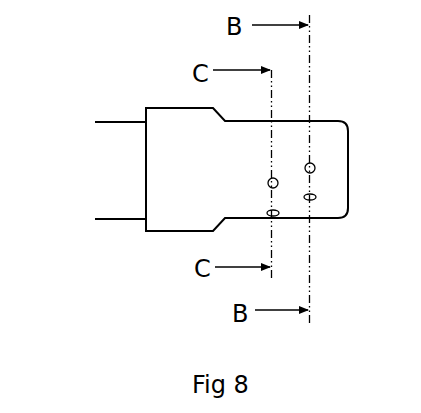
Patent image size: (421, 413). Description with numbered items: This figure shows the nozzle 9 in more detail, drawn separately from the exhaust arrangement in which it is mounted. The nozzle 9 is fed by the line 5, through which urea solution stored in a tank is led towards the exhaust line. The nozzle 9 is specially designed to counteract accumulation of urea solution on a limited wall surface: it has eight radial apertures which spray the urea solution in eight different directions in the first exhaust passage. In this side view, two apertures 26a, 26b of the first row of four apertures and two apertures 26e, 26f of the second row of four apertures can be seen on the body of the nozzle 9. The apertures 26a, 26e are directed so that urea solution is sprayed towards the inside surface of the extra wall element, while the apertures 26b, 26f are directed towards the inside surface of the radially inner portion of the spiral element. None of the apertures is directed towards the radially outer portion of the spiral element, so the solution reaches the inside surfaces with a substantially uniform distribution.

The line 5 is at (113, 145).
The nozzle 9 is at (185, 136).
The aperture 26a is at (315, 166).
The aperture 26b is at (316, 196).
The aperture 26e is at (268, 180).
The aperture 26f is at (267, 211).